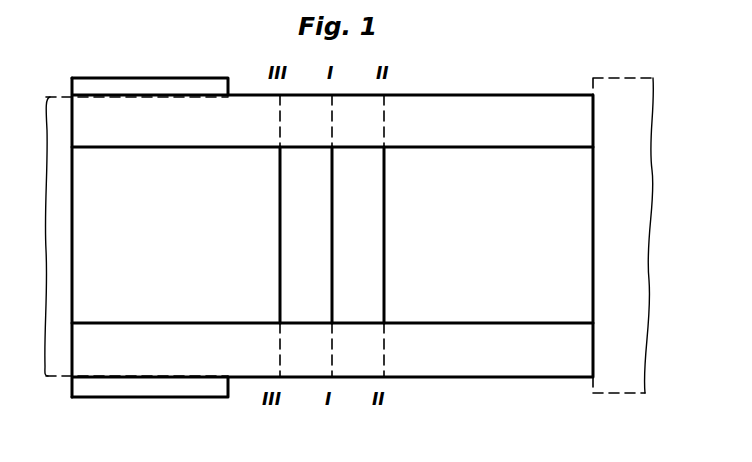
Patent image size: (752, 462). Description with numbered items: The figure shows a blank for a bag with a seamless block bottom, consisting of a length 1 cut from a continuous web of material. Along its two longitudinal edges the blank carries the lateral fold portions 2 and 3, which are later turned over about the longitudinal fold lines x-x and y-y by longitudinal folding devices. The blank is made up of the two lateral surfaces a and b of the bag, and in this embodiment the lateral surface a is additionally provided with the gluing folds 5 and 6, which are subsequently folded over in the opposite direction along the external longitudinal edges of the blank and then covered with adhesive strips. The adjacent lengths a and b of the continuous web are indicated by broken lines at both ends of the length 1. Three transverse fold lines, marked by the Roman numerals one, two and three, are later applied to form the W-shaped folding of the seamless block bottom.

The length of material web 1 is at (582, 192).
The lateral fold portion 2 is at (490, 105).
The lateral fold portion 3 is at (495, 362).
The gluing fold 5 is at (145, 390).
The gluing fold 6 is at (166, 84).
The lateral surface of the bag a is at (85, 255).
The lateral surface of the bag b is at (58, 303).